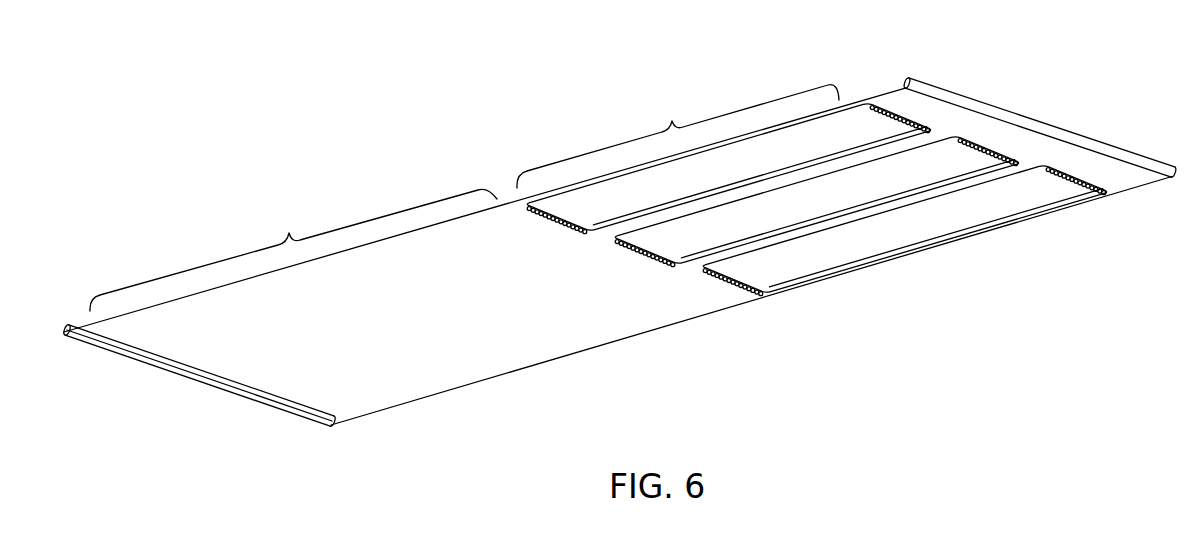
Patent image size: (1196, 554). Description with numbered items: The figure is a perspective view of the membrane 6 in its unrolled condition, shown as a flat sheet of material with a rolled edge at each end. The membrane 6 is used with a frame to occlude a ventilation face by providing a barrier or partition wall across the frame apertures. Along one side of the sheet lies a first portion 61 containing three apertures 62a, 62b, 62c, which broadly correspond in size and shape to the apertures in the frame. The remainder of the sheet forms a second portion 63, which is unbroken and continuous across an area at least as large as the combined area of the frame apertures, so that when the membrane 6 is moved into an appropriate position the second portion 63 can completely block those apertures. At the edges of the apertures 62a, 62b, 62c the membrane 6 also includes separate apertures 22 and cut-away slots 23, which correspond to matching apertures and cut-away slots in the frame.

The membrane 6 is at (687, 63).
The separate apertures 22 is at (881, 110).
The cut-away slots 23 is at (746, 283).
The first portion 61 is at (672, 121).
The aperture 62a is at (904, 231).
The aperture 62b is at (892, 194).
The aperture 62c is at (728, 143).
The second portion 63 is at (289, 233).